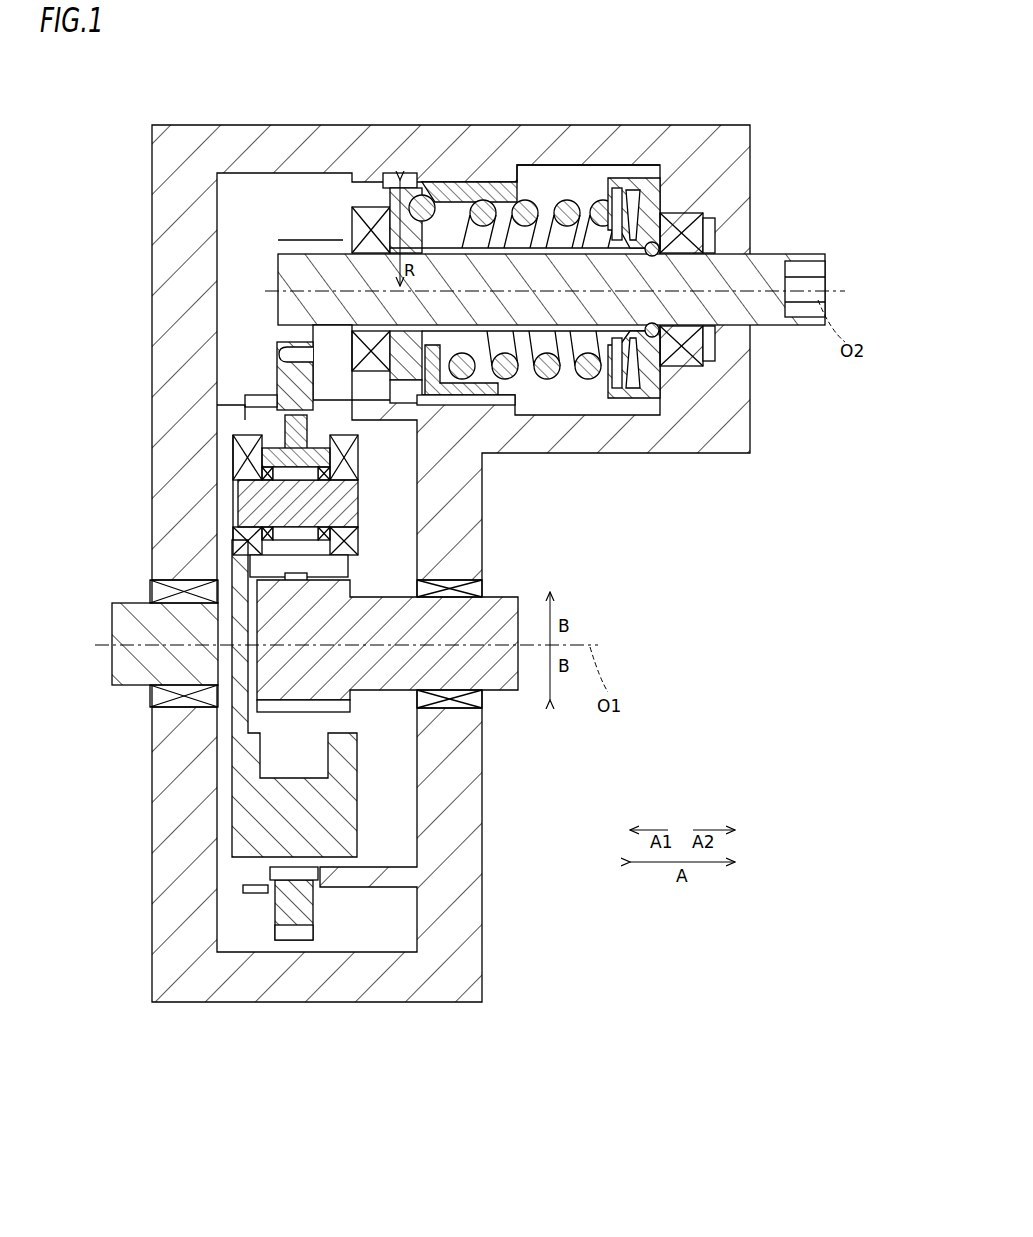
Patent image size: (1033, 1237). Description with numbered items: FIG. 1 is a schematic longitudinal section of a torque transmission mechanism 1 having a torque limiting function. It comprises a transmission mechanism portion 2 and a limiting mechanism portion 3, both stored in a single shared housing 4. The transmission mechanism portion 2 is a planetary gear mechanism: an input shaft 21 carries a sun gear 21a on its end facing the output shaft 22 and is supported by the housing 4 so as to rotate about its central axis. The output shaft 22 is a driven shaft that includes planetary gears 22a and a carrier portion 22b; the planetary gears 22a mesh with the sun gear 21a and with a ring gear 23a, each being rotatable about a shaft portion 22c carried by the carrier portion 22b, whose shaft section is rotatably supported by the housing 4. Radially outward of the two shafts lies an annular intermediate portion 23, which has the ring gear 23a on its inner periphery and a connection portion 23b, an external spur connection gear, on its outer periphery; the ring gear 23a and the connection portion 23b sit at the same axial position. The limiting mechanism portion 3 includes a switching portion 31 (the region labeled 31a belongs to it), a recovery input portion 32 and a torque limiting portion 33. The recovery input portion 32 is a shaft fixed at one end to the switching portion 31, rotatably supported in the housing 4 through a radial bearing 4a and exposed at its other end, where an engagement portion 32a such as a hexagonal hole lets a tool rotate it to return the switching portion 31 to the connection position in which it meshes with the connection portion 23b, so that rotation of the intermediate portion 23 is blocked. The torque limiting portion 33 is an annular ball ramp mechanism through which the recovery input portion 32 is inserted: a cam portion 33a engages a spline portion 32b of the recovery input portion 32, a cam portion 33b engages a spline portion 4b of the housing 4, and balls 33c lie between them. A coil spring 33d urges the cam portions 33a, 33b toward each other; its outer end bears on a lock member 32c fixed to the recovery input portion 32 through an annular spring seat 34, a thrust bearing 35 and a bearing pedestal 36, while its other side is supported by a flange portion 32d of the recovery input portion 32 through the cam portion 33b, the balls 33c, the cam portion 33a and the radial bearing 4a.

The torque transmission mechanism 1 is at (137, 118).
The transmission mechanism portion 2 is at (485, 843).
The limiting mechanism portion 3 is at (343, 190).
The housing 4 is at (160, 247).
The radial bearing 4a is at (690, 375).
The spline portion 4b is at (540, 180).
The input shaft 21 is at (510, 695).
The sun gear 21a is at (430, 585).
The output shaft 22 is at (130, 688).
The planetary gears 22a is at (280, 455).
The carrier portion 22b is at (300, 583).
The shaft portion 22c is at (268, 492).
The intermediate portion 23 is at (290, 392).
The ring gear 23a is at (290, 430).
The connection portion 23b is at (280, 360).
The switching portion 31 is at (268, 295).
The first shaft flange 31a is at (280, 340).
The recovery input portion 32 is at (760, 265).
The engagement portion 32a is at (805, 283).
The spline portion 32b is at (520, 410).
The lock member 32c is at (712, 235).
The flange portion 32d is at (340, 240).
The torque limiting portion 33 is at (420, 198).
The cam portion 33a is at (400, 185).
The cam portion 33b is at (525, 200).
The balls 33c is at (448, 185).
The coil spring 33d is at (630, 195).
The annular spring seat 34 is at (620, 392).
The thrust bearing 35 is at (632, 388).
The bearing pedestal 36 is at (656, 338).